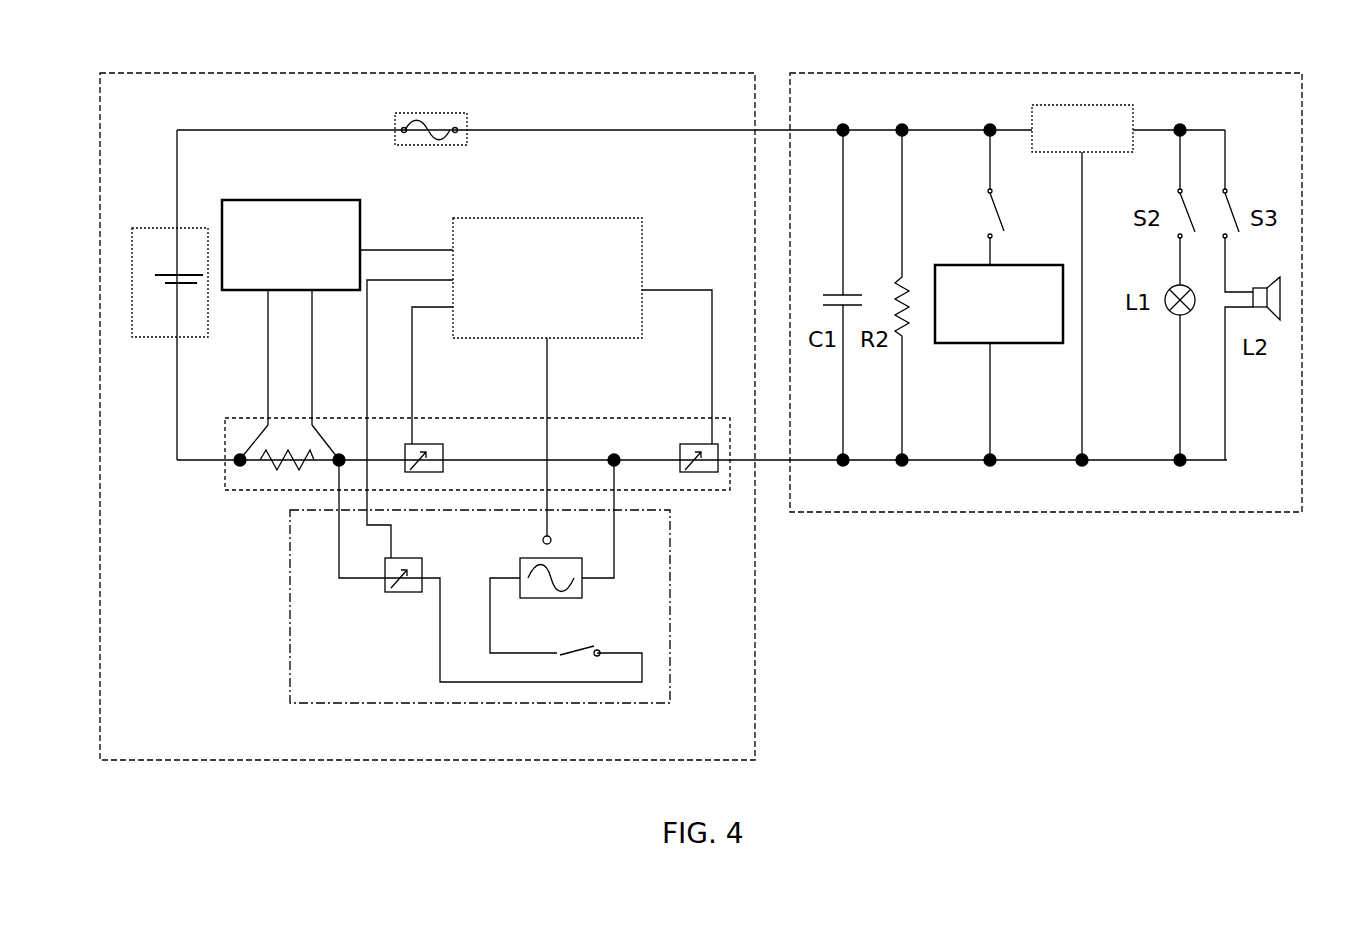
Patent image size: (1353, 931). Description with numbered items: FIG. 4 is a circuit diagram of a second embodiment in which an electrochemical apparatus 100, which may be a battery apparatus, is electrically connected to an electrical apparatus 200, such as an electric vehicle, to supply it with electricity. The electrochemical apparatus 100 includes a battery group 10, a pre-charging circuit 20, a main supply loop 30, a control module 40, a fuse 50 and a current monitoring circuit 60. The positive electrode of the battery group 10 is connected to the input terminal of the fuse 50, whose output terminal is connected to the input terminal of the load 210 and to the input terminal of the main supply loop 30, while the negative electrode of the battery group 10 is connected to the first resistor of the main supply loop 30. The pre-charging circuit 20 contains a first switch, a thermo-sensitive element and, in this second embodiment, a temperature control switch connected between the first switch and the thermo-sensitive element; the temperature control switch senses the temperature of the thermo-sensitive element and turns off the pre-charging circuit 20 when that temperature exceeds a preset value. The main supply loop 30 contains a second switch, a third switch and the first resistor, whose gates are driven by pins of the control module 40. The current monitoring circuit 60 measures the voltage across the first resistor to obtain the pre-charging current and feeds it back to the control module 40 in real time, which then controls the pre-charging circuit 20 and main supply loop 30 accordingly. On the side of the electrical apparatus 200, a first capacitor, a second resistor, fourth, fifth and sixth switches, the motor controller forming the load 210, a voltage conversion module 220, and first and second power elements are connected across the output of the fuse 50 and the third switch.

The electrochemical apparatus 100 is at (230, 72).
The electrical apparatus 200 is at (980, 72).
The battery group 10 is at (158, 227).
The pre-charging circuit 20 is at (510, 704).
The main supply loop 30 is at (267, 490).
The control module 40 is at (573, 217).
The fuse 50 is at (455, 146).
The current monitoring circuit 60 is at (287, 200).
The load 210 is at (1008, 343).
The voltage conversion module 220 is at (1100, 152).